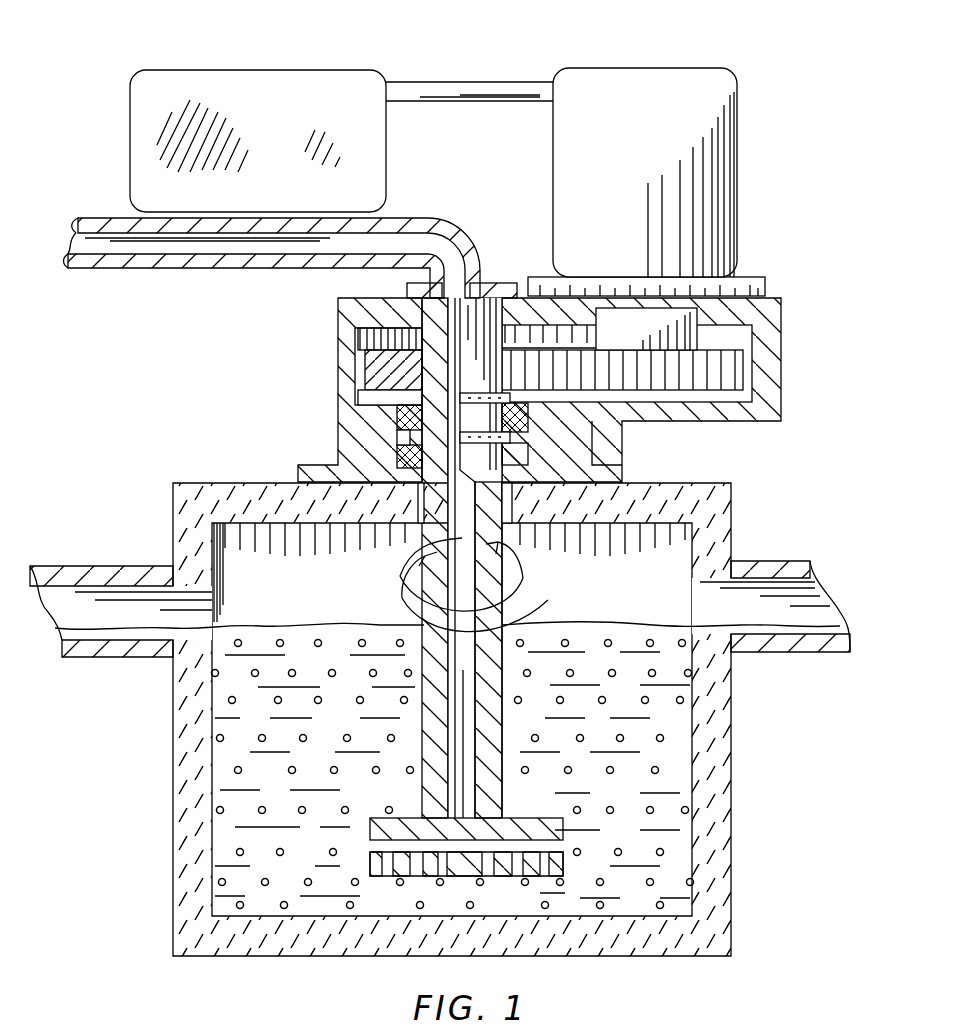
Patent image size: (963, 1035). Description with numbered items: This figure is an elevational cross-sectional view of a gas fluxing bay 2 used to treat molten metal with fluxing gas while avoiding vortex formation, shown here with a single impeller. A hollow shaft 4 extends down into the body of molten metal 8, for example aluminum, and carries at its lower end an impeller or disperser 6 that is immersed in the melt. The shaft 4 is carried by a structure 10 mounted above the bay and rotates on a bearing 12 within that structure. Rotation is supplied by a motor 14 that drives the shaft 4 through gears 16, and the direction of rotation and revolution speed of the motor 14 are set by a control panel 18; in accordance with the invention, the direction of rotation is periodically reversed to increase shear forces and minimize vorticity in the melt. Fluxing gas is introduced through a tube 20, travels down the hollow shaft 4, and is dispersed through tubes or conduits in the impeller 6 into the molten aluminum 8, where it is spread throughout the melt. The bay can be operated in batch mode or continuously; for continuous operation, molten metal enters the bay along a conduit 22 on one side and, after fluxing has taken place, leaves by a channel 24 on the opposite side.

The gas fluxing bay 2 is at (766, 717).
The hollow shaft 4 is at (498, 605).
The impeller or disperser 6 is at (540, 877).
The body of molten metal 8 is at (238, 790).
The structure 10 is at (697, 483).
The bearing 12 is at (395, 451).
The motor 14 is at (716, 68).
The gears 16 is at (357, 378).
The control panel 18 is at (338, 70).
The tube 20 is at (142, 266).
The conduit 22 is at (83, 566).
The channel 24 is at (785, 561).